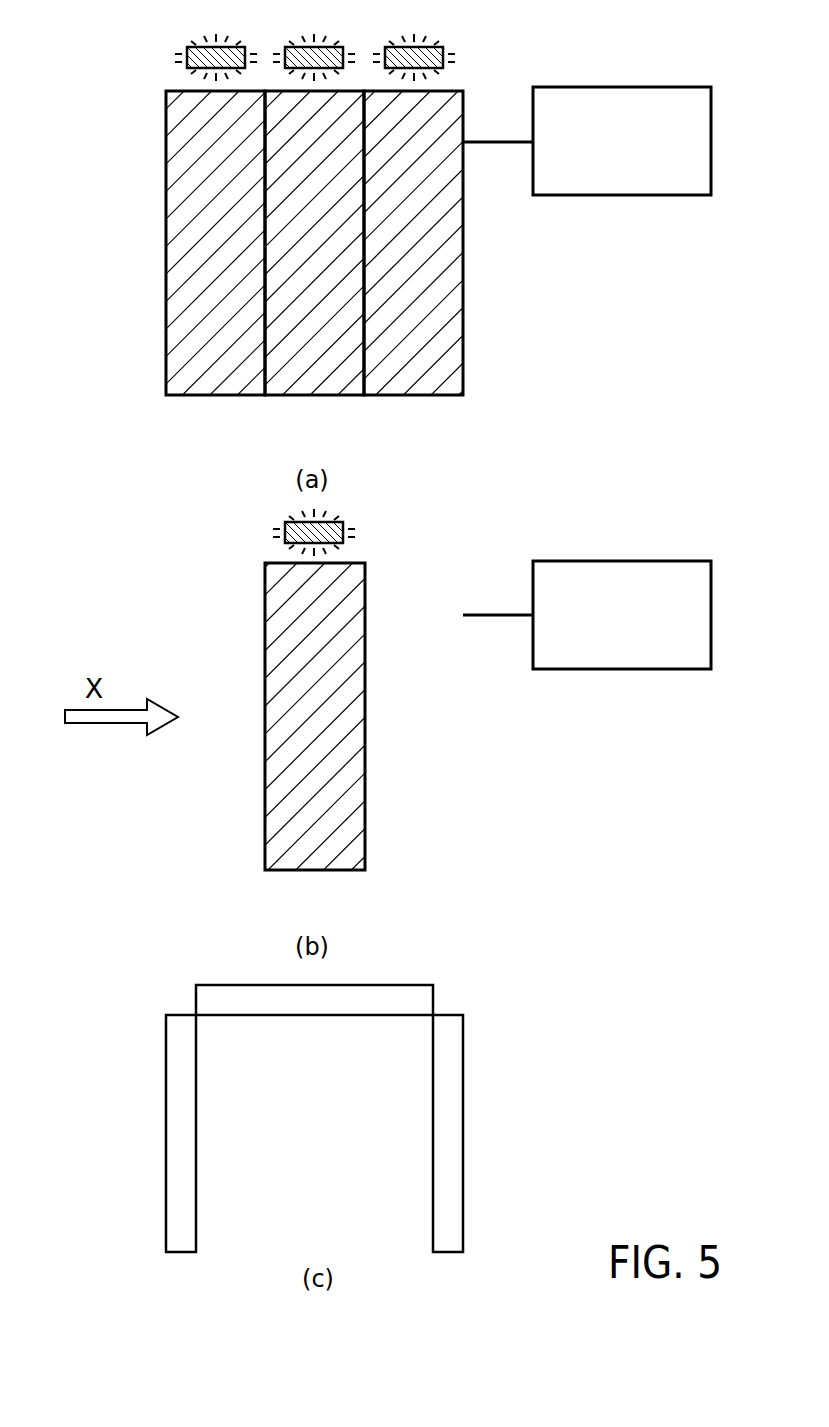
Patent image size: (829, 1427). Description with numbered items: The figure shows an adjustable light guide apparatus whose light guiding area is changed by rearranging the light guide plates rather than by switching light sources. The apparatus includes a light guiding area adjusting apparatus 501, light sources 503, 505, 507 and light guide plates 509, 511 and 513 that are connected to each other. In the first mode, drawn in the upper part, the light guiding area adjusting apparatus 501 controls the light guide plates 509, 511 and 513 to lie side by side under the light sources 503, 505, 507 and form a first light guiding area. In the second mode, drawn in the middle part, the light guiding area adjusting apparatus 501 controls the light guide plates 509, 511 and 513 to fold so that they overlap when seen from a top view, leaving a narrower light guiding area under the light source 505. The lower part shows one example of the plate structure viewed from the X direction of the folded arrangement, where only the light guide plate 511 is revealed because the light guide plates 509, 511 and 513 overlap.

The light guiding area adjusting apparatus 501 is at (610, 87).
The light source 503 is at (218, 55).
The light source 505 is at (316, 55).
The light source 507 is at (416, 55).
The light guide plate 509 is at (208, 196).
The light guide plate 511 is at (317, 358).
The light guide plate 513 is at (420, 273).